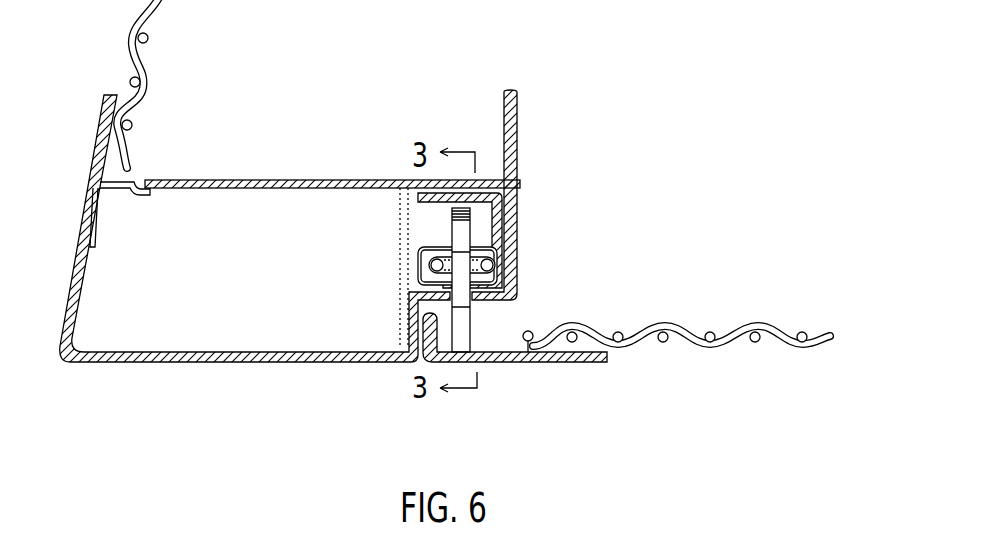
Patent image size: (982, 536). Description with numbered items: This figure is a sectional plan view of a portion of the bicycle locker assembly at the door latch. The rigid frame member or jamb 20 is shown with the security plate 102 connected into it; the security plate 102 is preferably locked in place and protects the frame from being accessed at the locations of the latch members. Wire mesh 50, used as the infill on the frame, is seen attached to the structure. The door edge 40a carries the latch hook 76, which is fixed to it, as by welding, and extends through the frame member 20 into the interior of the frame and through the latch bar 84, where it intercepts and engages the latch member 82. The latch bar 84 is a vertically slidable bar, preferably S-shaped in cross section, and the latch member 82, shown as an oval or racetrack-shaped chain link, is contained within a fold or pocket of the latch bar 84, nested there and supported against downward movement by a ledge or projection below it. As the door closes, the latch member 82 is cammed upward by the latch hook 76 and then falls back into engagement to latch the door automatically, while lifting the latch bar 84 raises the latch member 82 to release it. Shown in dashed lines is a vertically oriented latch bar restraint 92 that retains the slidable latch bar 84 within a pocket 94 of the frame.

The frame member 20 is at (378, 363).
The door edge 40a is at (513, 365).
The wire mesh 50 is at (148, 67).
The latch hook 76 is at (466, 230).
The latch member 82 is at (488, 265).
The latch bar 84 is at (497, 230).
The latch bar restraint 92 is at (405, 247).
The pocket 94 is at (425, 223).
The security plate 102 is at (262, 182).